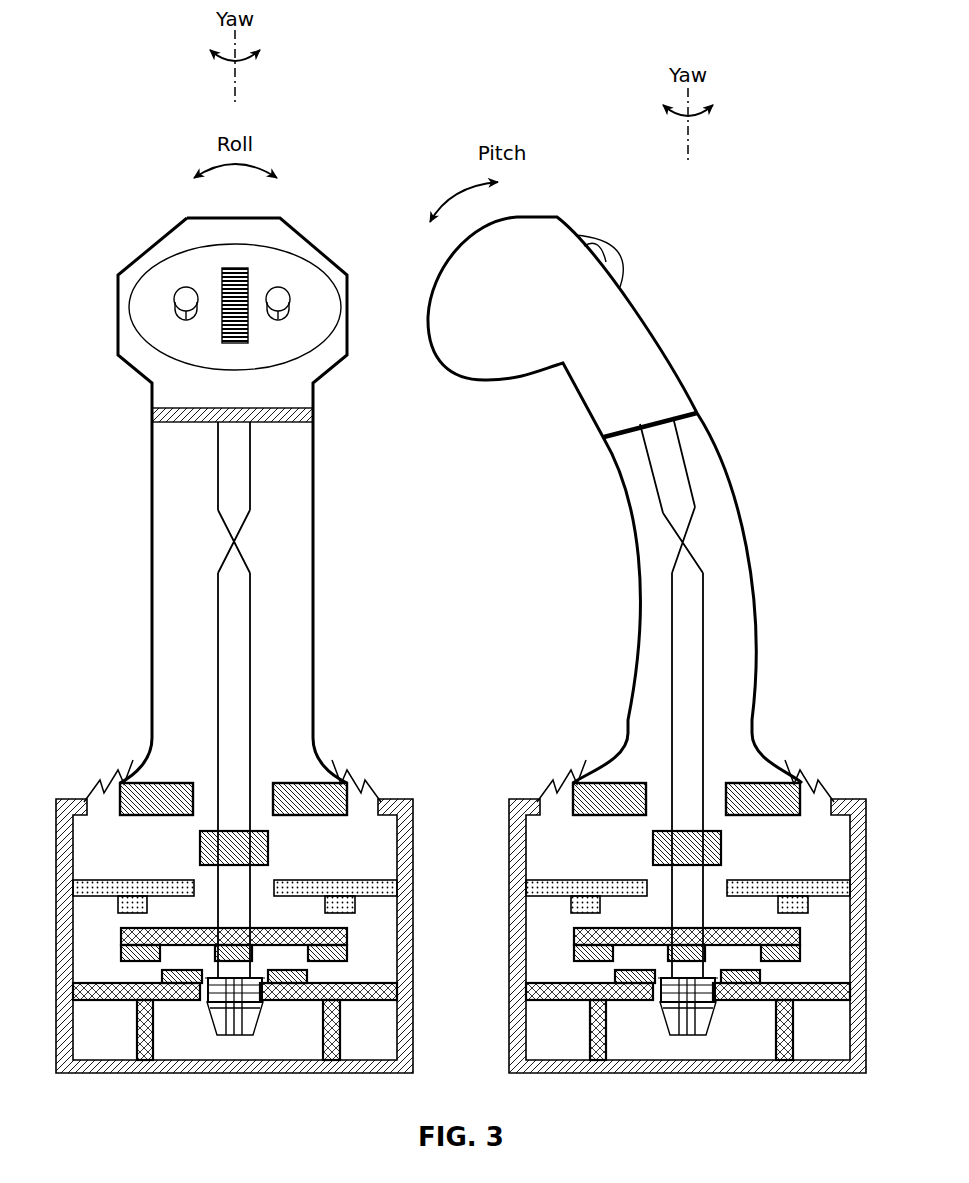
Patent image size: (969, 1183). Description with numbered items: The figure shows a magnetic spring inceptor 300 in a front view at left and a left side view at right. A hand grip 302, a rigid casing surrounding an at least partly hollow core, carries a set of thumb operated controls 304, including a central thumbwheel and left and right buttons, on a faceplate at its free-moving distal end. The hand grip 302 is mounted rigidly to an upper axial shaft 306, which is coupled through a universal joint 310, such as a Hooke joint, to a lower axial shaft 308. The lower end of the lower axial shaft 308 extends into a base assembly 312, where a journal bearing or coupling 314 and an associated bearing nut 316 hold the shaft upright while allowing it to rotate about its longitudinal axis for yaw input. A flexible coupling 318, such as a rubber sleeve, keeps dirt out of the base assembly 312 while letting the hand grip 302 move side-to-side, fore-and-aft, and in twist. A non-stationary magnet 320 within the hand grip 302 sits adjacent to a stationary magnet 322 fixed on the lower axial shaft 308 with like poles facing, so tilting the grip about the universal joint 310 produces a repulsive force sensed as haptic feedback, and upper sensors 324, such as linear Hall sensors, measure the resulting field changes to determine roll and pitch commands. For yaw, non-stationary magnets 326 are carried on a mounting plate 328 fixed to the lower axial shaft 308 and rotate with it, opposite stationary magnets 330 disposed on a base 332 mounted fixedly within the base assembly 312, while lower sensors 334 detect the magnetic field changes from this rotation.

The magnetic spring inceptor 300 is at (134, 100).
The hand grip 302 is at (152, 495).
The thumb operated controls 304 is at (145, 307).
The upper axial shaft 306 is at (505, 495).
The lower axial shaft 308 is at (505, 697).
The universal joint 310 is at (242, 541).
The base assembly 312 is at (125, 1074).
The bearing or coupling 314 is at (439, 1016).
The bearing nut 316 is at (213, 1025).
The flexible coupling 318 is at (377, 772).
The non-stationary magnet 320 is at (160, 783).
The stationary magnet 322 is at (270, 850).
The upper sensors 324 is at (461, 890).
The non-stationary magnets 326 is at (348, 953).
The mounting plate 328 is at (348, 936).
The stationary magnets 330 is at (308, 977).
The base 332 is at (351, 1002).
The lower sensors 334 is at (117, 911).